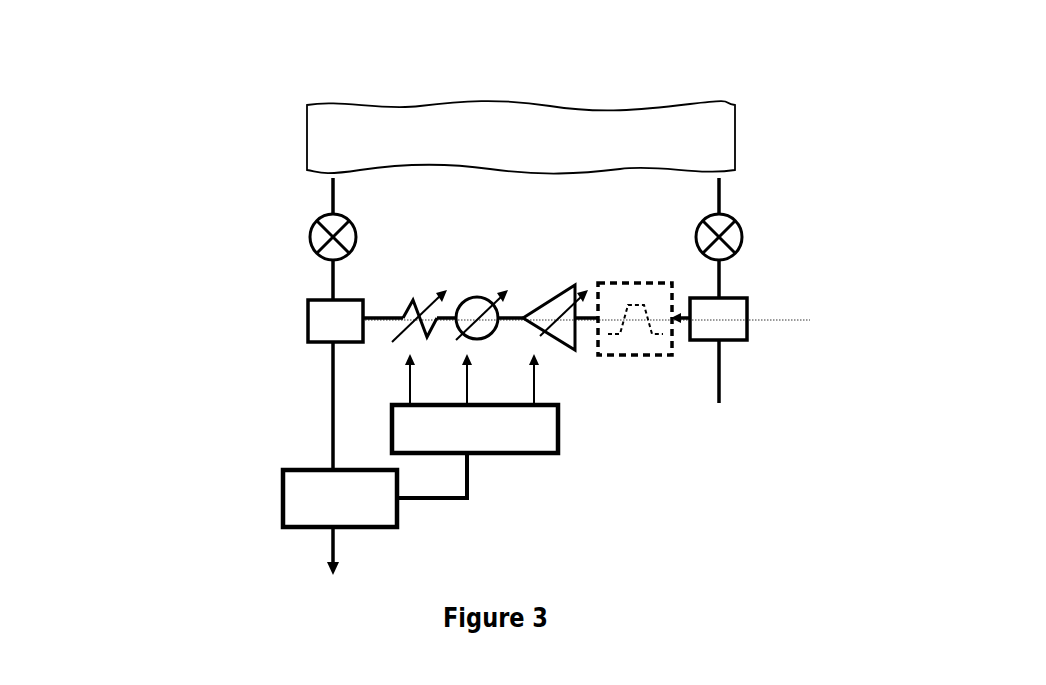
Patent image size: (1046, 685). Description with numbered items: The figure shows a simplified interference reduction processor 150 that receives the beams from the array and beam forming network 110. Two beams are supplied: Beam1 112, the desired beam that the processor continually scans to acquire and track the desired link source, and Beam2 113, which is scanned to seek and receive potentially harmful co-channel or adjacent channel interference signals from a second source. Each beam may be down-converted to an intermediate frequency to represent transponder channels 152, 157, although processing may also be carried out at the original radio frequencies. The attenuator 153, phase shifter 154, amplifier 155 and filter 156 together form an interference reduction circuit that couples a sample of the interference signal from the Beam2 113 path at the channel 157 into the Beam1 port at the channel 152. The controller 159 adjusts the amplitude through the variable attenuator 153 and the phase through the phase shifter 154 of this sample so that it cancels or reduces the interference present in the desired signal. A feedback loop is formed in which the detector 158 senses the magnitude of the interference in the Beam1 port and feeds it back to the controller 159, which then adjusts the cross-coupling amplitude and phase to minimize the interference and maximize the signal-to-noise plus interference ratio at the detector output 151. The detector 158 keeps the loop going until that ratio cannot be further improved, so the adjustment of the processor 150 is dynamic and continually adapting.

The interference reduction processor 150 is at (186, 99).
The beam forming network 110 is at (403, 102).
The Beam1 112 is at (152, 195).
The Beam2 113 is at (861, 185).
The output 151 is at (349, 560).
The transponder channel 152 is at (306, 321).
The variable attenuator 153 is at (425, 288).
The phase shifter 154 is at (477, 292).
The amplifier 155 is at (547, 292).
The filter 156 is at (636, 283).
The transponder channel 157 is at (748, 314).
The detector 158 is at (283, 490).
The controller 159 is at (558, 432).